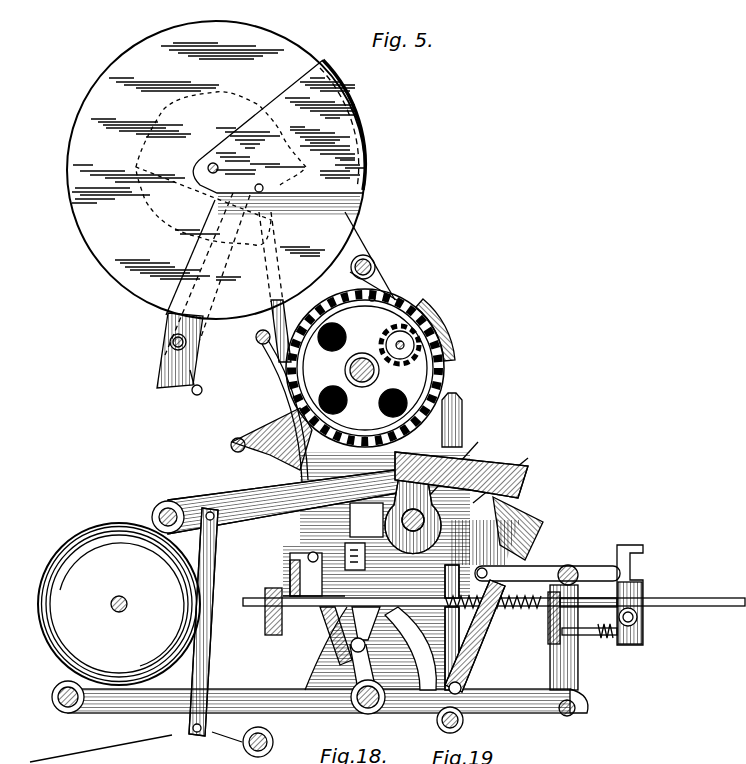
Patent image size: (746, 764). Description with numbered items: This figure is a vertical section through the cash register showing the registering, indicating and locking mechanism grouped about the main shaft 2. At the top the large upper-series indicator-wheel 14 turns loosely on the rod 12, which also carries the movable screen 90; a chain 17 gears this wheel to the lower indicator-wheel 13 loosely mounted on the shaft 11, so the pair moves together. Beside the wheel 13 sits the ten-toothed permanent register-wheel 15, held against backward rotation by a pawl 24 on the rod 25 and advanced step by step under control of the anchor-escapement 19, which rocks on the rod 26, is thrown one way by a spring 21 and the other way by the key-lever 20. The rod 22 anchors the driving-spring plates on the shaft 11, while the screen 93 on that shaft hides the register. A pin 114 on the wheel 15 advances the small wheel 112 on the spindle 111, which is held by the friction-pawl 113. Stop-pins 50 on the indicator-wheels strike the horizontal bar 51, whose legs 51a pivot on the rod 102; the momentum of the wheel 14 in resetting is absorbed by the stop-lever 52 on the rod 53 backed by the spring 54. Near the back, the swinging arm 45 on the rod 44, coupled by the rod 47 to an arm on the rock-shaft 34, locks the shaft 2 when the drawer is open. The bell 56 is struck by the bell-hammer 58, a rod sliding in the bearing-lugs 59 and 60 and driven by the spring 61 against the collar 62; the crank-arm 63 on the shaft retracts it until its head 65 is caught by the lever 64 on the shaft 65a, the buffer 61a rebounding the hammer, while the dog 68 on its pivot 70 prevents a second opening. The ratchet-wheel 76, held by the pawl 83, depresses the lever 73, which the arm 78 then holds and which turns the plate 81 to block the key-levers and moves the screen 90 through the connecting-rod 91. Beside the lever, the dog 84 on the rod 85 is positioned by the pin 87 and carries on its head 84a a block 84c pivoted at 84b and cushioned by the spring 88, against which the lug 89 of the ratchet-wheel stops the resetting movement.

The indicator-wheel of upper series 14 is at (281, 53).
The movable screen 90 is at (360, 126).
The rod 12 is at (210, 171).
The chain 17 is at (360, 232).
The rod 25 is at (372, 262).
The pawl 24 is at (385, 285).
The pin 114 is at (376, 298).
The register-wheel 15 is at (365, 368).
The indicator-wheel 13 is at (442, 357).
The screen 93 is at (435, 312).
The connecting-rod 91 is at (292, 304).
The shaft 11 is at (345, 370).
The small wheel 112 is at (388, 340).
The spindle 111 is at (405, 347).
The friction-pawl 113 is at (440, 372).
The stop-pin 50 is at (462, 418).
The horizontal bar 51 is at (452, 400).
The stop-lever 52 is at (168, 325).
The rod 53 is at (170, 343).
The spring 54 is at (192, 394).
The rod 22 is at (255, 338).
The spring 21 is at (285, 390).
The anchor-escapement 19 is at (295, 450).
The rod 26 is at (300, 475).
The swinging arm 45 is at (200, 500).
The rod 44 is at (158, 508).
The coupling rod 47 is at (214, 650).
The bell 56 is at (119, 604).
The lever 73 is at (165, 713).
The rock-shaft 34 is at (272, 746).
The bearing-lug 59 is at (265, 592).
The ratchet-wheel 76 is at (440, 505).
The main shaft 2 is at (401, 555).
The pawl 83 is at (508, 470).
The key-lever 20 is at (528, 470).
The plate 81 is at (530, 520).
The crank-arm 63 is at (455, 530).
The lever 64 is at (596, 566).
The shaft 65a is at (572, 566).
The swinging dog 68 is at (643, 560).
The head 65 is at (642, 628).
The pivot 70 is at (636, 614).
The spring 61 is at (530, 610).
The bearing-lug 60 is at (552, 640).
The elastic buffer 61a is at (606, 640).
The swinging arm 78 is at (550, 676).
The bell-hammer 58 is at (435, 648).
The collar 62 is at (411, 648).
The leg 51a is at (460, 672).
The rod 102 is at (463, 725).
The pivot 84b is at (292, 562).
The block 84c is at (310, 552).
The lug 89 is at (354, 520).
The spring 88 is at (345, 548).
The head 84a is at (314, 617).
The pin 87 is at (350, 647).
The dog 84 is at (352, 695).
The rod 85 is at (368, 714).